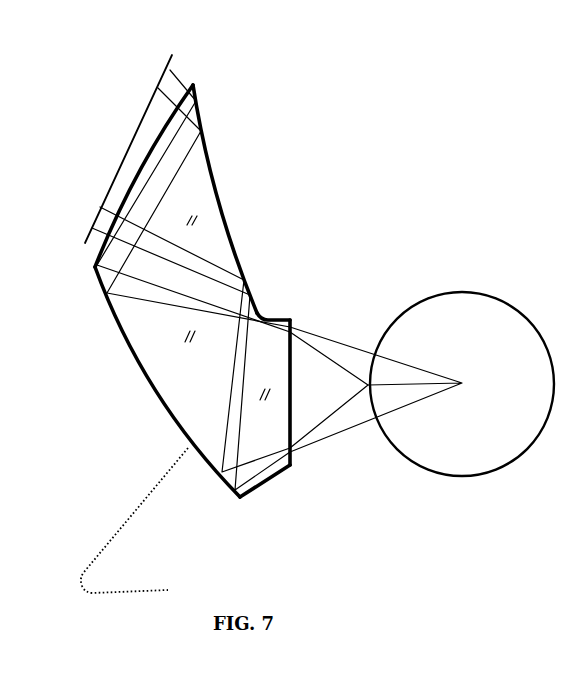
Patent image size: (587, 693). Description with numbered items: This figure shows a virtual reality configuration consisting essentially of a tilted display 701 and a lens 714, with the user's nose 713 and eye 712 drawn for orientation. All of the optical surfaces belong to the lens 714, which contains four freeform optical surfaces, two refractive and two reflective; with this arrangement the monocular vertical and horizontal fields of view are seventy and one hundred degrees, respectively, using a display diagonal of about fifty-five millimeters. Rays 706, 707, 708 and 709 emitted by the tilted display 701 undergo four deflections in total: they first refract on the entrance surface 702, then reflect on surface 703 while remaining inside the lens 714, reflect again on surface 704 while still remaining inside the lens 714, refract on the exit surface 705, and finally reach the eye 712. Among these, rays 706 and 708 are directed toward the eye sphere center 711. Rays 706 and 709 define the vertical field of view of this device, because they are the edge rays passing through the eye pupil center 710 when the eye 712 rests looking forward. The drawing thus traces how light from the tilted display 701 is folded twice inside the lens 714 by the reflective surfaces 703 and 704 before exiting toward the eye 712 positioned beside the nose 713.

The tilted display 701 is at (172, 55).
The entrance surface 702 is at (95, 258).
The reflective surface 703 is at (212, 173).
The reflective surface 704 is at (117, 318).
The exit surface 705 is at (290, 377).
The ray 706 is at (170, 70).
The ray 707 is at (158, 88).
The ray 708 is at (217, 263).
The ray 709 is at (223, 285).
The eye pupil center 710 is at (368, 385).
The eye sphere center 711 is at (462, 383).
The eye 712 is at (508, 280).
The nose 713 is at (138, 498).
The lens 714 is at (170, 365).